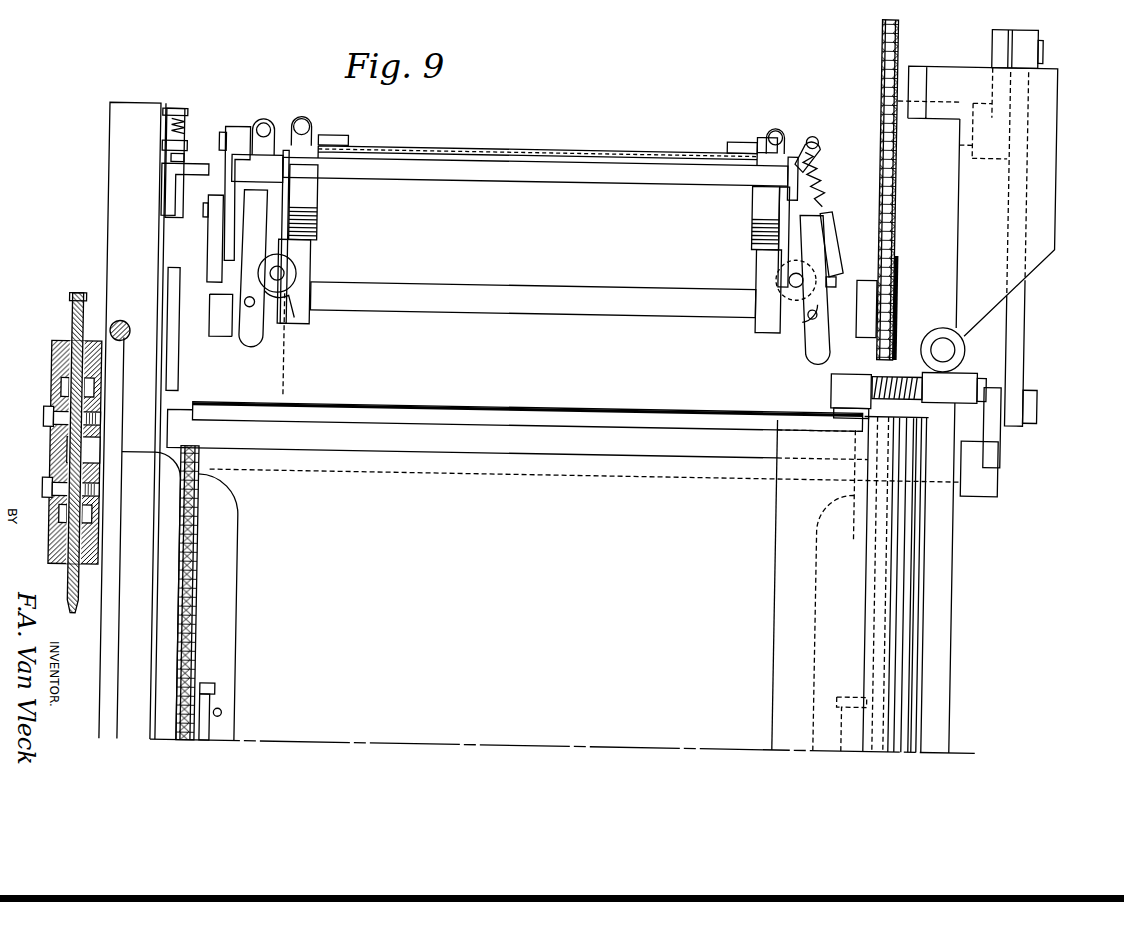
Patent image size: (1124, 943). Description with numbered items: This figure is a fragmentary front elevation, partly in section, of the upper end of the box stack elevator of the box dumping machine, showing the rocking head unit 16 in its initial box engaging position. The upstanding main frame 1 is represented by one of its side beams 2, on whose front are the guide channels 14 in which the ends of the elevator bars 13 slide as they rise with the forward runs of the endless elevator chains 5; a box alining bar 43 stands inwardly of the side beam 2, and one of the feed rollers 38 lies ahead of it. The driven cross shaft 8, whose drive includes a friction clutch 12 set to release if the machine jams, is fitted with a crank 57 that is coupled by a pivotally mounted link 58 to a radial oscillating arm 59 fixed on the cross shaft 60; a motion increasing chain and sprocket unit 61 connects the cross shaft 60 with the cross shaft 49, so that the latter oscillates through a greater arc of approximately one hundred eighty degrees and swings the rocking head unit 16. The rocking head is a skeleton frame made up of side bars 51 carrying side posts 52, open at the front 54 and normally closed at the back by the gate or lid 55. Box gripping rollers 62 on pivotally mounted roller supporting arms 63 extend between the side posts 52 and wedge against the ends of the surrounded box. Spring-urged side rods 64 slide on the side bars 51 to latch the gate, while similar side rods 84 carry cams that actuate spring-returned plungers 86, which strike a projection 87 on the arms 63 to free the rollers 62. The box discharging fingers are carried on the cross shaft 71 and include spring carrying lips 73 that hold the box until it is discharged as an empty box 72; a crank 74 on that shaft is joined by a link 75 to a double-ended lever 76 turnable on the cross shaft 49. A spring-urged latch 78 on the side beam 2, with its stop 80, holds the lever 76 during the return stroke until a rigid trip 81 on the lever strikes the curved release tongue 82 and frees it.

The main frame 1 is at (97, 112).
The side beams 2 is at (116, 163).
The elevator chains 5 is at (197, 596).
The driven cross shaft 8 is at (80, 455).
The friction clutch 12 is at (53, 352).
The elevator bars 13 is at (504, 419).
The guide channels 14 is at (171, 534).
The rocking head unit 16 is at (612, 184).
The feed rollers 38 is at (787, 588).
The box alining bars 43 is at (226, 646).
The cross shaft 49 is at (527, 300).
The side bars 51 is at (315, 154).
The side posts 52 is at (251, 323).
The open front 54 is at (462, 324).
The gate or lid 55 is at (543, 148).
The crank 57 is at (1020, 404).
The link 58 is at (1019, 302).
The radial oscillating arm 59 is at (993, 48).
The cross shaft 60 is at (964, 153).
The motion increasing chain and sprocket unit 61 is at (889, 230).
The box gripping rollers 62 is at (290, 282).
The roller supporting arms 63 is at (275, 300).
The side rods 64 is at (300, 132).
The cross shaft 71 is at (453, 174).
The empty box 72 is at (282, 380).
The spring carrying lips 73 is at (311, 209).
The crank 74 is at (238, 142).
The link 75 is at (227, 177).
The double-ended lever 76 is at (209, 239).
The spring-urged latch 78 is at (175, 186).
The stop 80 is at (165, 176).
The rigid trip 81 is at (170, 367).
The curved release tongue 82 is at (182, 151).
The side rods 84 is at (263, 133).
The spring-returned plungers 86 is at (815, 180).
The projection 87 is at (222, 296).